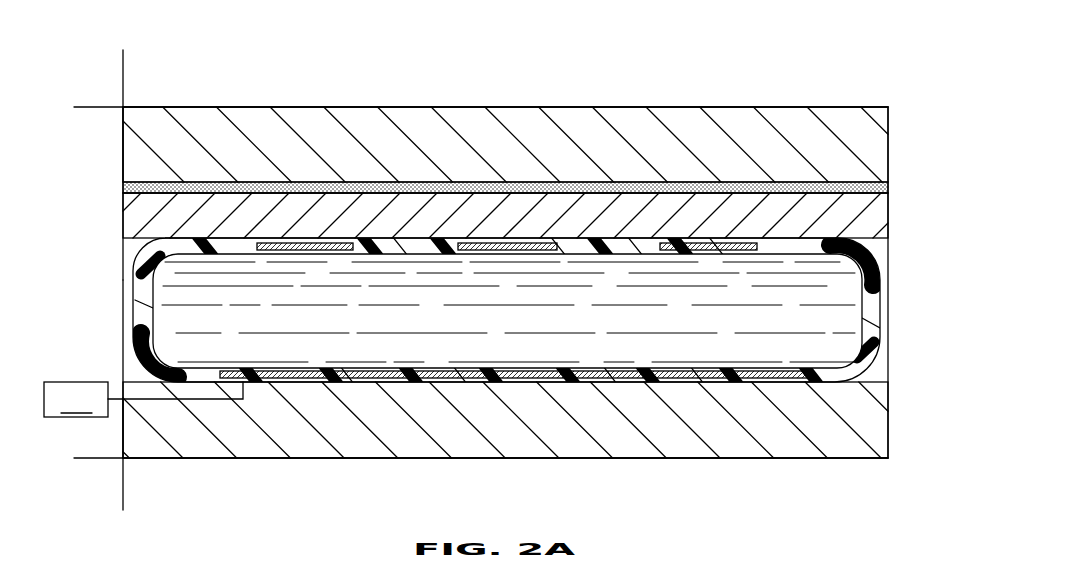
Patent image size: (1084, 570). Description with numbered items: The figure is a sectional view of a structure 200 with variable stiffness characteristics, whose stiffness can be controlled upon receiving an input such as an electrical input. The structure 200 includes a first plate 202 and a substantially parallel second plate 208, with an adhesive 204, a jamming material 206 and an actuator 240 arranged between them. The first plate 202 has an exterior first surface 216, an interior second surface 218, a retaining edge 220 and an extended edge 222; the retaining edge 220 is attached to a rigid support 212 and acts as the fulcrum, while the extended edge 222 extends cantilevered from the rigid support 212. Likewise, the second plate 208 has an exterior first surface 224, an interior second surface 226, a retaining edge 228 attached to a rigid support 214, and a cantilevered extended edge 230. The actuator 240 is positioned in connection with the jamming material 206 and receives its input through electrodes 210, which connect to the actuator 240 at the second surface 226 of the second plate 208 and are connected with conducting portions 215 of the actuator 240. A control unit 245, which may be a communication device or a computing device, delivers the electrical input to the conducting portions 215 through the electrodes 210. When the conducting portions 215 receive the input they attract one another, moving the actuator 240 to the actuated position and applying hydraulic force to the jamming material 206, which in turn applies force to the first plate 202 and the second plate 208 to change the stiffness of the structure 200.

The structure 200 is at (812, 75).
The first plate 202 is at (862, 145).
The adhesive 204 is at (884, 187).
The jamming material 206 is at (872, 220).
The second plate 208 is at (857, 413).
The electrodes 210 is at (222, 400).
The rigid support 212 is at (125, 73).
The rigid support 214 is at (125, 492).
The conducting portions 215 is at (678, 382).
The first surface 216 is at (637, 106).
The second surface 218 is at (138, 196).
The retaining edge 220 is at (122, 148).
The extended edge 222 is at (98, 107).
The first surface 224 is at (297, 460).
The second surface 226 is at (880, 382).
The retaining edge 228 is at (120, 435).
The extended edge 230 is at (92, 460).
The actuator 240 is at (846, 295).
The control unit 245 is at (76, 399).